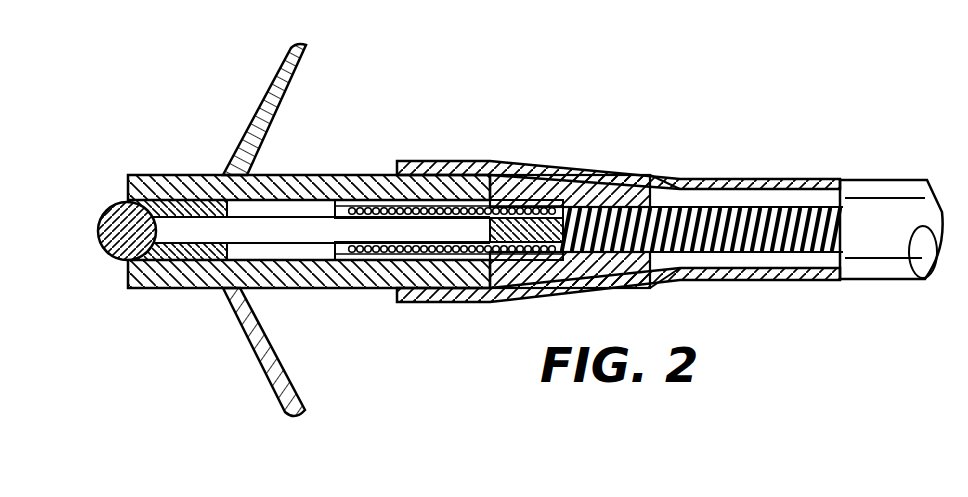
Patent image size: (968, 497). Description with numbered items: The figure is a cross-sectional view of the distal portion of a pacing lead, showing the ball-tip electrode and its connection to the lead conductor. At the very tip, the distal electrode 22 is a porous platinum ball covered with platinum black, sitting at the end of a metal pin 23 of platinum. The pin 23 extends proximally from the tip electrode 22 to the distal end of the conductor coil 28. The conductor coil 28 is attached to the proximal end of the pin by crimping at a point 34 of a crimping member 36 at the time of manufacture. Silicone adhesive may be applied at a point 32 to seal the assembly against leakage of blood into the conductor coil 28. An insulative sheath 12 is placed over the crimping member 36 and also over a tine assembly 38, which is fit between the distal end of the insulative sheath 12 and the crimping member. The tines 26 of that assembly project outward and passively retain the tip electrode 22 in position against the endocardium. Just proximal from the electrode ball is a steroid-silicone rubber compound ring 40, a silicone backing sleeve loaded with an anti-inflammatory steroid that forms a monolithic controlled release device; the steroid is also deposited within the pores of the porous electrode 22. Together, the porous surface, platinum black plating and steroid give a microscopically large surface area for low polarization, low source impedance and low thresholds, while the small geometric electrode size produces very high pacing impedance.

The insulative sheath 12 is at (810, 177).
The tip electrode 22 is at (112, 205).
The metal pin 23 is at (350, 177).
The tines 26 is at (306, 45).
The conductor coil 28 is at (678, 179).
The silicone adhesive point 32 is at (343, 288).
The crimping point 34 is at (463, 302).
The crimping member 36 is at (553, 190).
The tine assembly 38 is at (494, 160).
The steroid-silicone rubber compound ring 40 is at (190, 200).